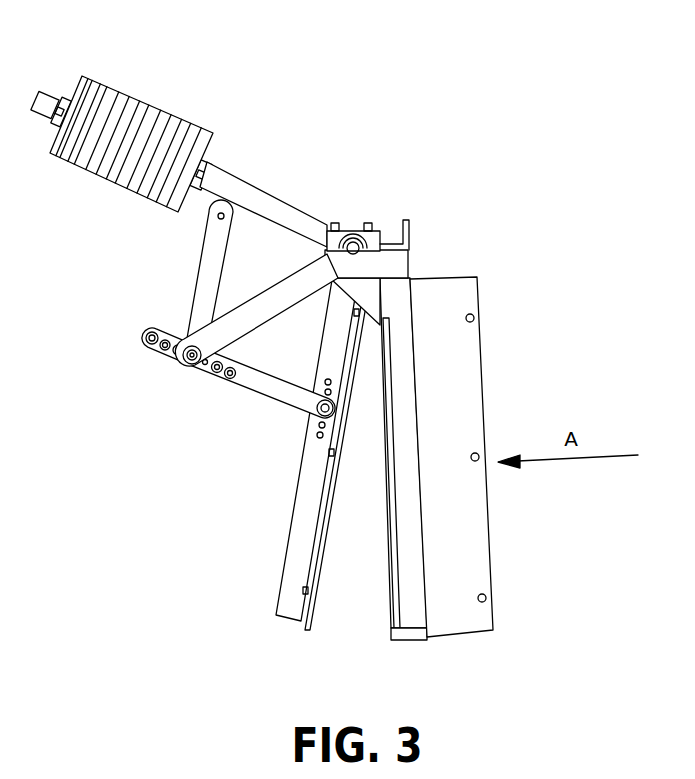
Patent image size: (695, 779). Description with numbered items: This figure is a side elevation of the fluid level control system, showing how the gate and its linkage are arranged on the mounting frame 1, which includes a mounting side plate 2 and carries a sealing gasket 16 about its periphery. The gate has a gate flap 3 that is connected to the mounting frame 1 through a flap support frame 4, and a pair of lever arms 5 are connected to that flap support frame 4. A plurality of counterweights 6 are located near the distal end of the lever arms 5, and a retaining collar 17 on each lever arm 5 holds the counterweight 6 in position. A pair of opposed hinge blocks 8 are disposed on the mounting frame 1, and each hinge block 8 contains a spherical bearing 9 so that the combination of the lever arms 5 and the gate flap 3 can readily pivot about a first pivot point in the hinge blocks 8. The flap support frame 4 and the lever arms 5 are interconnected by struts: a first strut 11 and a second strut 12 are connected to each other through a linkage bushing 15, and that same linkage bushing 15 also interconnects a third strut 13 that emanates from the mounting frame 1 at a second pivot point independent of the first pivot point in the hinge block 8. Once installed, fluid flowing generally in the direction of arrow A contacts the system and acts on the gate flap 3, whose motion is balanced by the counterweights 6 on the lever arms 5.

The mounting frame 1 is at (407, 280).
The mounting side plate 2 is at (457, 362).
The gate flap 3 is at (317, 582).
The flap support frame 4 is at (284, 608).
The lever arms 5 is at (275, 200).
The counterweights 6 is at (143, 103).
The hinge blocks 8 is at (376, 235).
The spherical bearing 9 is at (353, 232).
The first strut 11 is at (205, 250).
The second strut 12 is at (253, 388).
The third strut 13 is at (275, 303).
The linkage bushing 15 is at (240, 178).
The sealing gasket 16 is at (388, 626).
The retaining collar 17 is at (66, 98).